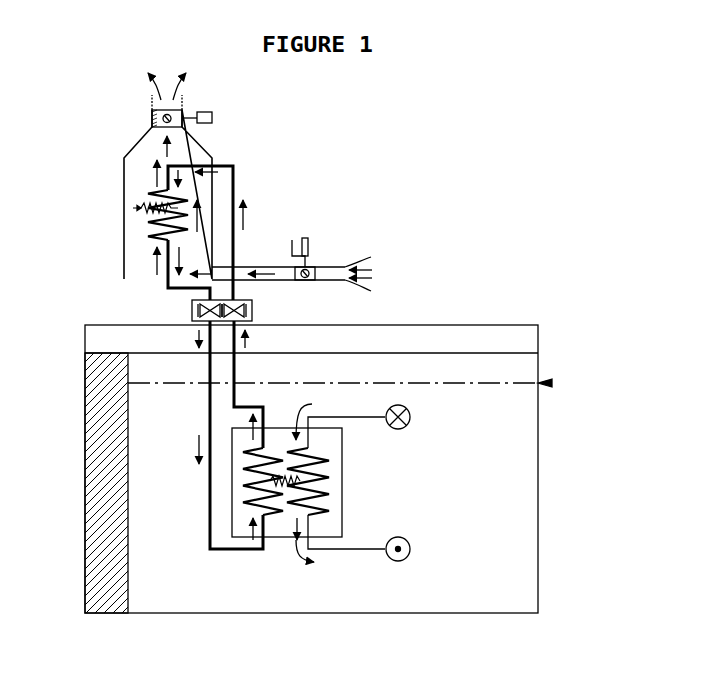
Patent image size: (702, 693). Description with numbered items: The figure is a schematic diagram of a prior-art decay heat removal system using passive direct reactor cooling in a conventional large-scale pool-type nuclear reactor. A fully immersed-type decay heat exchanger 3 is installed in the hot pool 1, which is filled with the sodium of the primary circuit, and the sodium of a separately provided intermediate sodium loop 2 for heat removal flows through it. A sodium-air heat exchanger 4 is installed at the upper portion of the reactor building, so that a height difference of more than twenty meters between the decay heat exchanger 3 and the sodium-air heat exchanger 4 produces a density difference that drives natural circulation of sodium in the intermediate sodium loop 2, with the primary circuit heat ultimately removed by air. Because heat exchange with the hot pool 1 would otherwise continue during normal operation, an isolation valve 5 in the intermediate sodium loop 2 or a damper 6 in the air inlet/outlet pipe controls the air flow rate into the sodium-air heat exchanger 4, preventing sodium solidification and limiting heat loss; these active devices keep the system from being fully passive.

The hot pool 1 is at (528, 454).
The intermediate sodium loop 2 is at (209, 405).
The decay heat exchanger 3 is at (342, 487).
The sodium-air heat exchanger 4 is at (124, 178).
The isolation valve 5 is at (252, 300).
The damper 6 is at (178, 95).